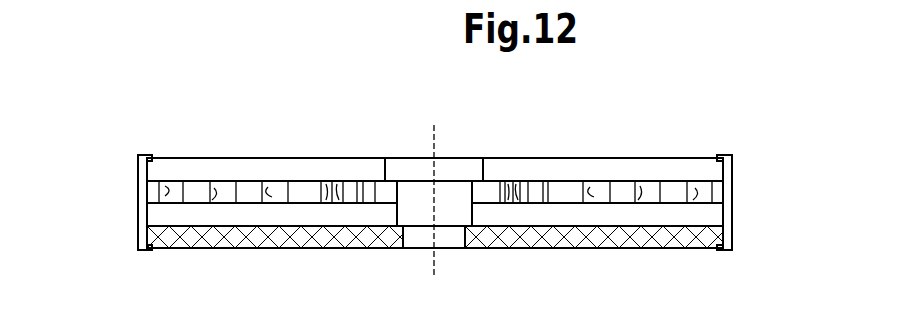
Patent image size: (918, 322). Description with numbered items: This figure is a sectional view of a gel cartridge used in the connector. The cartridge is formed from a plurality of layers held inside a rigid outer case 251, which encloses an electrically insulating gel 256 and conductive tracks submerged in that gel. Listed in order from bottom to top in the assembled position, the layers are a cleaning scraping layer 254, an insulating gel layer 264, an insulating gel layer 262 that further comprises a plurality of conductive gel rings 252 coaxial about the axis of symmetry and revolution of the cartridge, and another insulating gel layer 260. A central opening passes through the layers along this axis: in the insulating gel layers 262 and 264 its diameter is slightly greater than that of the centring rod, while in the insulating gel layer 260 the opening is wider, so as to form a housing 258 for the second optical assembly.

The rigid outer case 251 is at (733, 213).
The conductive gel rings 252 is at (698, 182).
The cleaning scraping layer 254 is at (138, 238).
The insulating gel 256 is at (197, 182).
The housing 258 is at (393, 172).
The insulating gel layer 260 is at (162, 173).
The insulating gel layer 262 is at (722, 190).
The insulating gel layer 264 is at (137, 220).